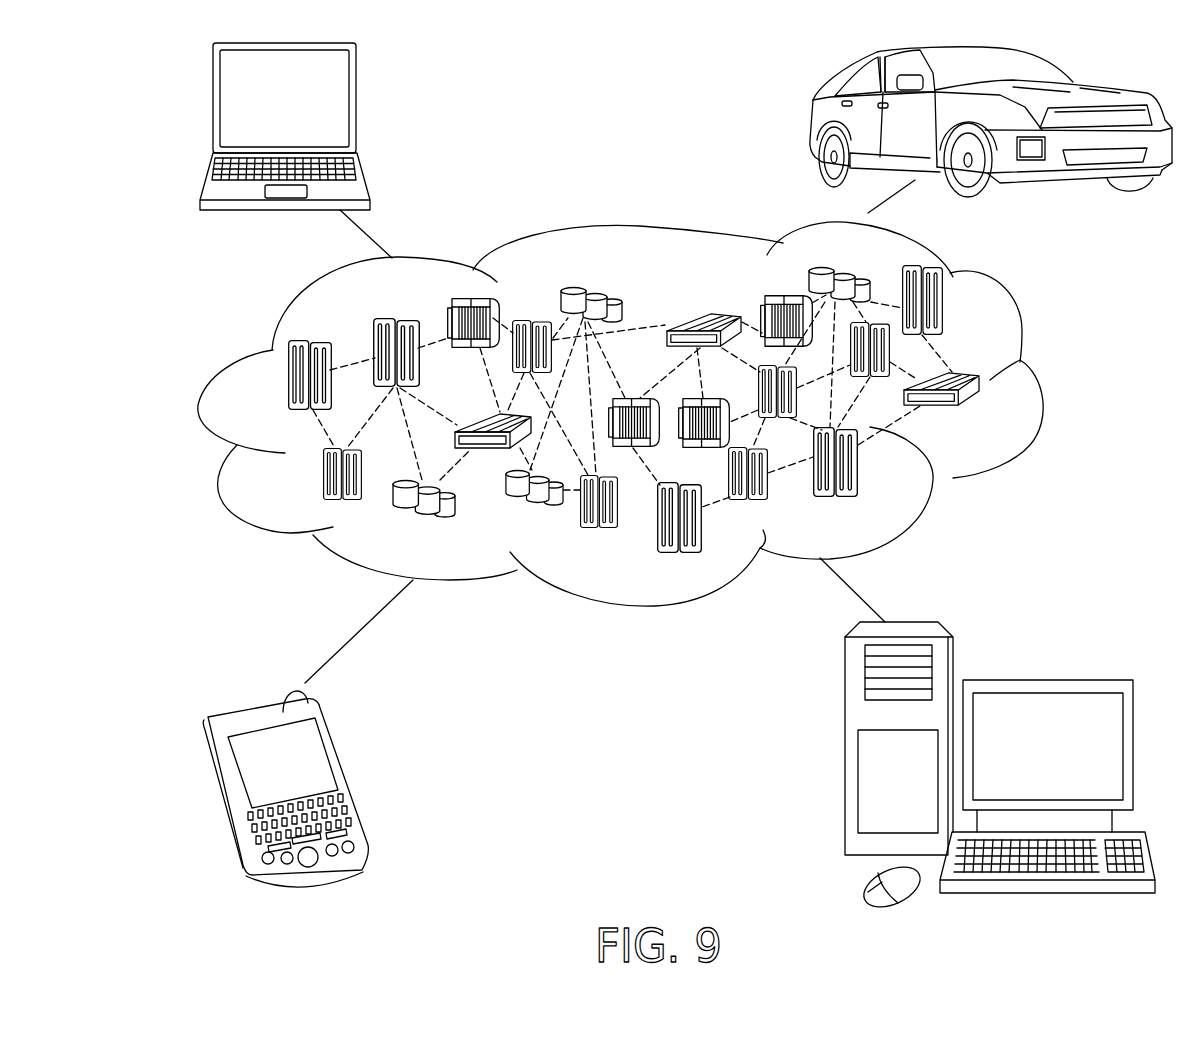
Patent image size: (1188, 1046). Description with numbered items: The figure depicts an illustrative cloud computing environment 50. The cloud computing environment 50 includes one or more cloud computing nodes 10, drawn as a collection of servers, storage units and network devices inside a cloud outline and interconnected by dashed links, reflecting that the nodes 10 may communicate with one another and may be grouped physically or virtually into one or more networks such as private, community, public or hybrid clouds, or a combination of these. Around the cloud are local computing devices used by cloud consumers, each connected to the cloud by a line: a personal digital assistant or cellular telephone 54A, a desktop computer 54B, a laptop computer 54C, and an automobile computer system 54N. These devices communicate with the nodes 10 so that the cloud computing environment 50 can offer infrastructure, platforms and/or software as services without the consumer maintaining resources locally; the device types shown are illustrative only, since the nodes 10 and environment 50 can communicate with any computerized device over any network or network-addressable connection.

The cloud computing node 10 is at (987, 418).
The cloud computing environment 50 is at (1045, 388).
The personal digital assistant (PDA) or cellular telephone 54A is at (348, 778).
The desktop computer 54B is at (1047, 680).
The laptop computer 54C is at (360, 110).
The automobile computer system 54N is at (812, 130).